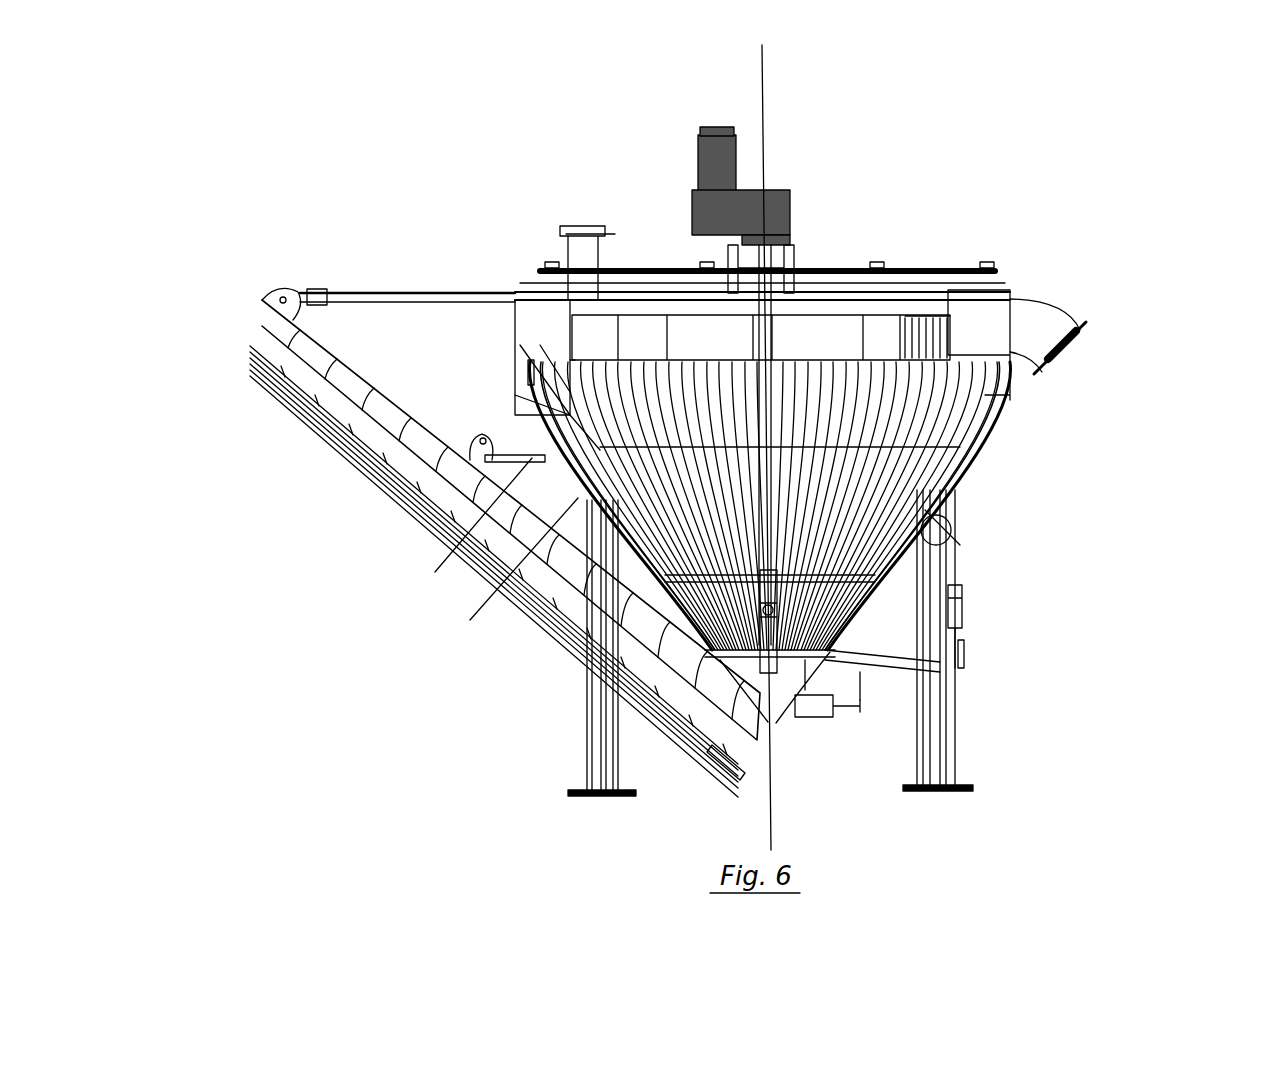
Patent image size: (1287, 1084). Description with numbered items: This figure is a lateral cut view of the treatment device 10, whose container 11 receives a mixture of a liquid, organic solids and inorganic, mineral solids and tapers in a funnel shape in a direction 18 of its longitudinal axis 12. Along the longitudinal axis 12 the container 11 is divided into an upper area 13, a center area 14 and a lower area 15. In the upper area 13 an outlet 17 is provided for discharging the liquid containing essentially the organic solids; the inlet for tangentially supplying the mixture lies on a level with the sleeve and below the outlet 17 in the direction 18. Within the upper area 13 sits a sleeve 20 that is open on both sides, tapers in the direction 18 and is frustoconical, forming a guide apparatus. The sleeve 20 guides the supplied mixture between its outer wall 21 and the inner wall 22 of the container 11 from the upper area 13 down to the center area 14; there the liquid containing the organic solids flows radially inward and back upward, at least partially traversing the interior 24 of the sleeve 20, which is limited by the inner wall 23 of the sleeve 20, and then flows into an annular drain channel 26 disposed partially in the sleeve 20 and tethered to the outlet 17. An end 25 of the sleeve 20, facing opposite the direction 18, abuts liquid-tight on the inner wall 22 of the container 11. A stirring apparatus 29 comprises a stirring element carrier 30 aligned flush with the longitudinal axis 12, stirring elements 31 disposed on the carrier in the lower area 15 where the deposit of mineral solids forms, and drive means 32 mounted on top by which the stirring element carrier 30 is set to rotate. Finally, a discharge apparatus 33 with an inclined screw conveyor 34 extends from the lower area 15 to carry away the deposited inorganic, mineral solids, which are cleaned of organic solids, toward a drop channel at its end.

The treatment device 10 is at (1050, 174).
The container 11 is at (888, 240).
The longitudinal axis 12 is at (762, 102).
The upper area 13 is at (1062, 393).
The center area 14 is at (1012, 513).
The lower area 15 is at (892, 622).
The outlet 17 is at (1070, 298).
The direction 18 is at (808, 838).
The sleeve 20 is at (552, 340).
The outer wall 21 is at (518, 372).
The inner wall 22 is at (518, 400).
The inner wall 23 is at (577, 455).
The interior 24 is at (672, 408).
The end 25 is at (518, 342).
The annular drain channel 26 is at (925, 325).
The stirring apparatus 29 is at (783, 160).
The stirring element carrier 30 is at (770, 568).
The stirring elements 31 is at (815, 572).
The drive means 32 is at (712, 152).
The discharge apparatus 33 is at (290, 458).
The screw conveyor 34 is at (406, 462).